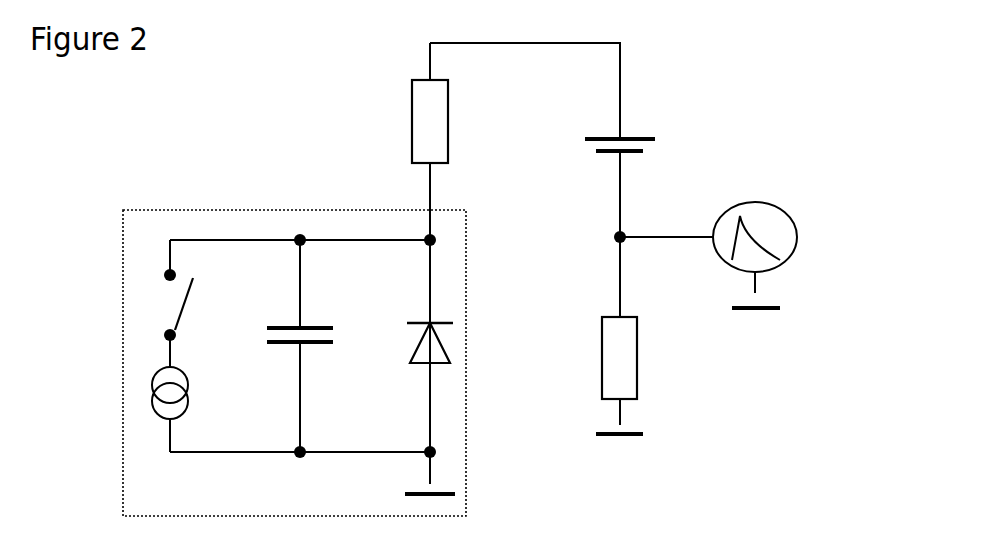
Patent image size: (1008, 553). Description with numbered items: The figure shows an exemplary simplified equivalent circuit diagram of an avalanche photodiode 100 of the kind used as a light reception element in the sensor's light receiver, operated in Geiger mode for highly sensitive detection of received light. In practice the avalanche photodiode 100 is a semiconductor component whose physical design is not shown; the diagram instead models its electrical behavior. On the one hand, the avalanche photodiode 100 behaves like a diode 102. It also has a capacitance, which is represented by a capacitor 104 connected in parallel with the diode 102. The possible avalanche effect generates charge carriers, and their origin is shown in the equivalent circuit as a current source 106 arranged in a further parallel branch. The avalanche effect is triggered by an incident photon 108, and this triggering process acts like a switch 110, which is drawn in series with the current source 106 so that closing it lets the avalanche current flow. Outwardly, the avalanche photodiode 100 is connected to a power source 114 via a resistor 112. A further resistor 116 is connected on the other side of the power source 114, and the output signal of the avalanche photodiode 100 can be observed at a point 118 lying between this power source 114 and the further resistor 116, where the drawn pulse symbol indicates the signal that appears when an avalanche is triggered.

The avalanche photodiode 100 is at (262, 210).
The diode 102 is at (447, 352).
The capacitor 104 is at (313, 343).
The current source 106 is at (207, 387).
The incident photon 108 is at (147, 305).
The switch 110 is at (187, 305).
The resistor 112 is at (430, 117).
The power source 114 is at (630, 137).
The further resistor 116 is at (630, 362).
The point 118 is at (797, 247).